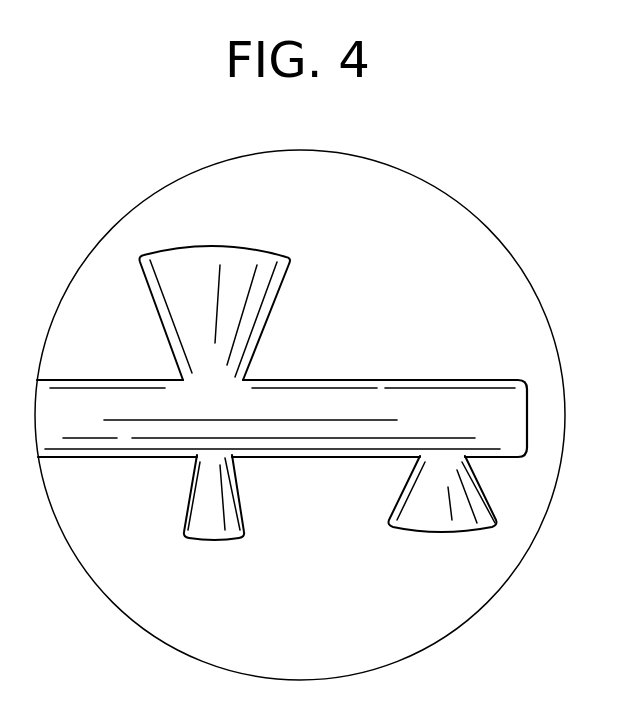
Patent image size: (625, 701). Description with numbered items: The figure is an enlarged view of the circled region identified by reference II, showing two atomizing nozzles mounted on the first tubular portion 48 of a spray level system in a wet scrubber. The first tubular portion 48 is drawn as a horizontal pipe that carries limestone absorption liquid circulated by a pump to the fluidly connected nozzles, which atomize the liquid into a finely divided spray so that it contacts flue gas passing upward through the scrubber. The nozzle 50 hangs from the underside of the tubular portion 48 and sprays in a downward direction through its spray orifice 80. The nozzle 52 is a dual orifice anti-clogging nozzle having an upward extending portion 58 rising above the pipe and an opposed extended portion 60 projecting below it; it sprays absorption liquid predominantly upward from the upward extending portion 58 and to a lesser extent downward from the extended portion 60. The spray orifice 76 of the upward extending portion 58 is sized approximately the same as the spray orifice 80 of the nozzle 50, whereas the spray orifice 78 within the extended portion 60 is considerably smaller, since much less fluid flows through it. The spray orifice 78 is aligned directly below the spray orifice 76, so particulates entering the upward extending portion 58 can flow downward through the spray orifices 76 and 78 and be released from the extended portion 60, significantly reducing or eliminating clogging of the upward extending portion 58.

The first tubular portion 48 is at (98, 457).
The atomizing nozzle 50 is at (480, 485).
The dual orifice anti-clogging nozzle 52 is at (280, 397).
The upward extending portion 58 is at (253, 304).
The extended portion 60 is at (226, 511).
The spray orifice 76 is at (212, 358).
The spray orifice 78 is at (216, 457).
The spray orifice 80 is at (447, 455).
The reference II is at (488, 226).